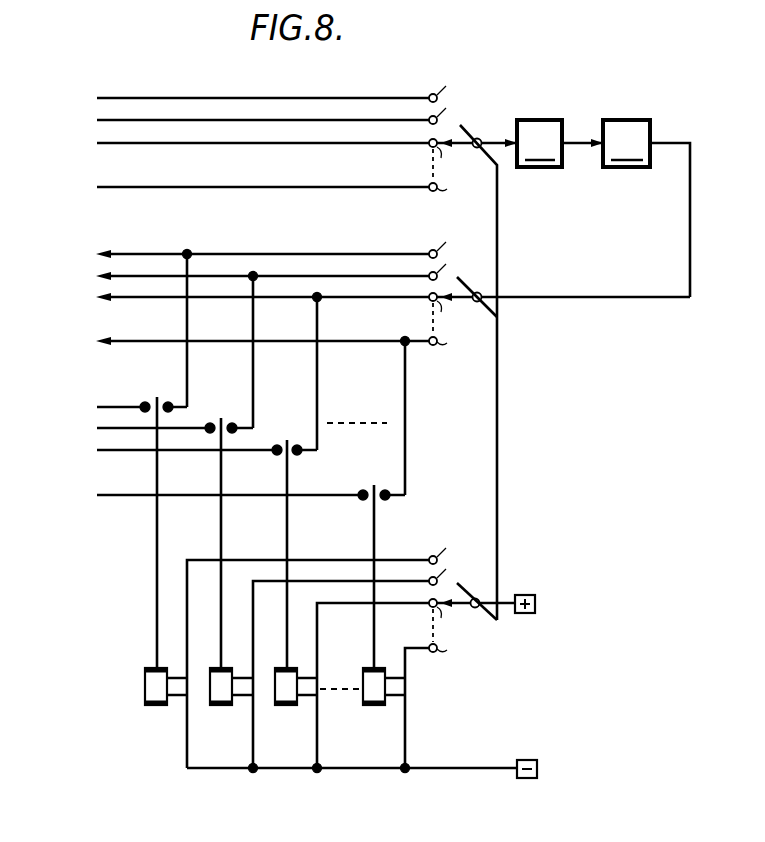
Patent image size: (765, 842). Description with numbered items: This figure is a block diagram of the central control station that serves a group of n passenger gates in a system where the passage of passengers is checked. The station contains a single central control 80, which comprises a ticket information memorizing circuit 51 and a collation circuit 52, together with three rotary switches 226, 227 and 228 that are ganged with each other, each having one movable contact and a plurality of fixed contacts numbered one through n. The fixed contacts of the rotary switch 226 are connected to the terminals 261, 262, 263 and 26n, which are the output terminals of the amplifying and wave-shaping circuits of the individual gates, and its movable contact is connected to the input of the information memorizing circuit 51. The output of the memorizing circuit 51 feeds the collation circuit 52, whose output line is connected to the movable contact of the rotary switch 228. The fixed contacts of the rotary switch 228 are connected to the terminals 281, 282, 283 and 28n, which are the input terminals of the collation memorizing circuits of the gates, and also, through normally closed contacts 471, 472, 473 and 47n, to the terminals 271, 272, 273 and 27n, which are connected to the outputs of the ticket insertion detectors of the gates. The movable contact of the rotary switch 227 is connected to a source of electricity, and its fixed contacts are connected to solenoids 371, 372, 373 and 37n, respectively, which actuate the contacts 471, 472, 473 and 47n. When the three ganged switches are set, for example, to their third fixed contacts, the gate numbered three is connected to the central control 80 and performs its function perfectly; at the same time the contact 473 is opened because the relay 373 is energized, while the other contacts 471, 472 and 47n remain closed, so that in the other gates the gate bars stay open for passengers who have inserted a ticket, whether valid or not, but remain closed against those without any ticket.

The output terminal 261 is at (148, 98).
The output terminal 262 is at (208, 121).
The output terminal 263 is at (207, 144).
The output terminal 26n is at (272, 186).
The rotary switch 226 is at (460, 126).
The ticket information memorizing circuit 51 is at (556, 120).
The collation circuit 52 is at (628, 167).
The central control 80 is at (591, 209).
The input terminal 281 is at (165, 249).
The input terminal 282 is at (213, 275).
The input terminal 283 is at (170, 298).
The input terminal 28n is at (220, 340).
The rotary switch 228 is at (484, 291).
The terminal 271 is at (122, 406).
The terminal 272 is at (97, 427).
The terminal 273 is at (97, 449).
The terminal 27n is at (144, 494).
The normally closed contact 471 is at (170, 402).
The normally closed contact 472 is at (211, 425).
The normally closed contact 473 is at (278, 446).
The normally closed contact 47n is at (384, 491).
The rotary switch 227 is at (484, 596).
The solenoid 371 is at (157, 706).
The solenoid 372 is at (221, 706).
The solenoid 373 is at (287, 706).
The solenoid 37n is at (374, 706).